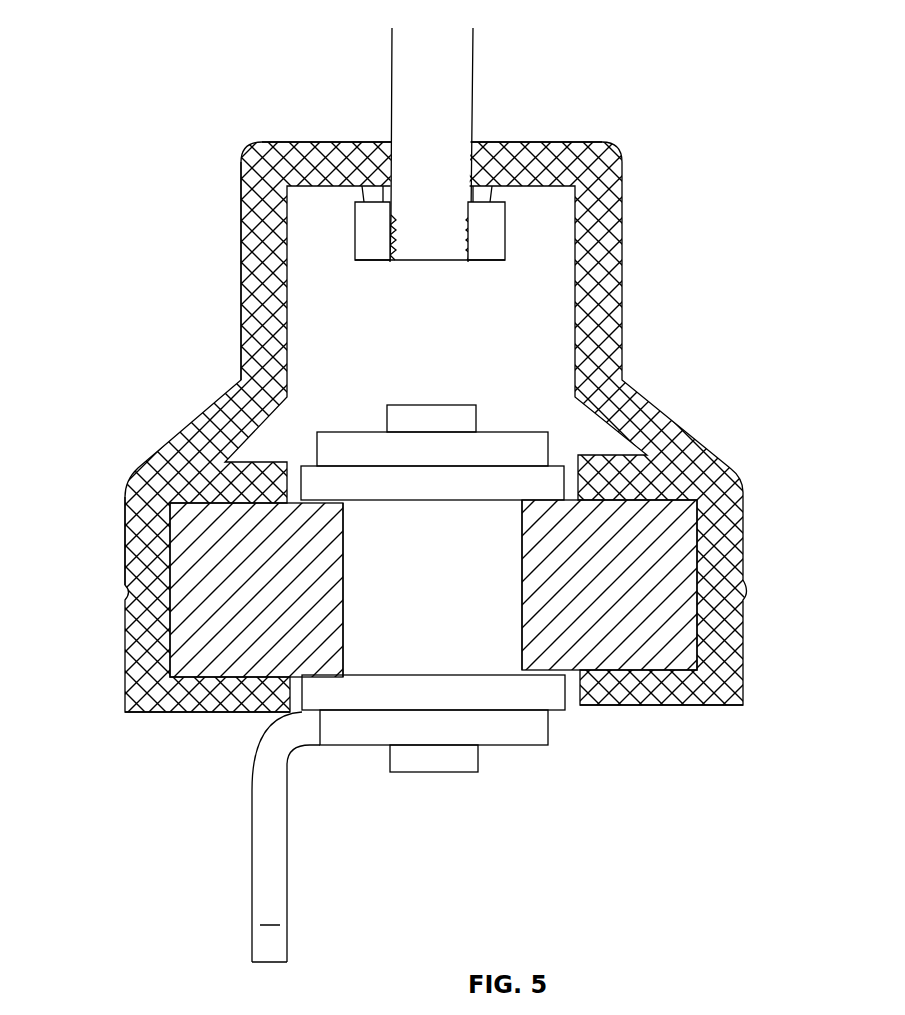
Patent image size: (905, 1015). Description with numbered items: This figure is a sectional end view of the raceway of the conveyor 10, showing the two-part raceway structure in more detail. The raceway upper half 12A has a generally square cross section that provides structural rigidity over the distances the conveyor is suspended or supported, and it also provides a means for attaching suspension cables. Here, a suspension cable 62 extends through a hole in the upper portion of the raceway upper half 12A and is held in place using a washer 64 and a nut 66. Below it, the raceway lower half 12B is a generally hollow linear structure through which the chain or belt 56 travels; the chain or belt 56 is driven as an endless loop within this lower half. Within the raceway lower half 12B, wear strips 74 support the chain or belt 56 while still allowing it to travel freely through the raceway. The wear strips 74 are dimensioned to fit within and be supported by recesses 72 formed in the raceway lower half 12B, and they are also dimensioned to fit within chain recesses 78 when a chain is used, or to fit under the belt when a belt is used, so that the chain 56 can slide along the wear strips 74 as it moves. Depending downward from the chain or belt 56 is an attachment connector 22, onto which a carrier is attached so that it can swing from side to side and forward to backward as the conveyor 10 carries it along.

The conveyor 10 is at (602, 243).
The raceway upper half 12A is at (241, 186).
The raceway lower half 12B is at (127, 592).
The attachment connector 22 is at (275, 852).
The chain or belt 56 is at (455, 600).
The suspension cable 62 is at (458, 90).
The washer 64 is at (515, 163).
The nut 66 is at (505, 230).
The recesses 72 is at (185, 678).
The wear strips 74 is at (210, 548).
The chain recesses 78 is at (300, 708).